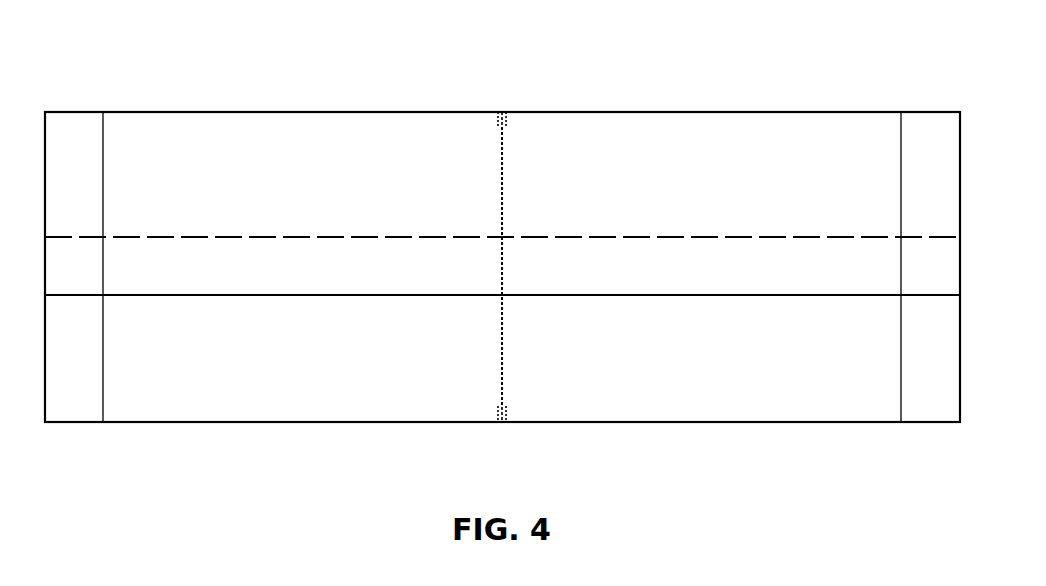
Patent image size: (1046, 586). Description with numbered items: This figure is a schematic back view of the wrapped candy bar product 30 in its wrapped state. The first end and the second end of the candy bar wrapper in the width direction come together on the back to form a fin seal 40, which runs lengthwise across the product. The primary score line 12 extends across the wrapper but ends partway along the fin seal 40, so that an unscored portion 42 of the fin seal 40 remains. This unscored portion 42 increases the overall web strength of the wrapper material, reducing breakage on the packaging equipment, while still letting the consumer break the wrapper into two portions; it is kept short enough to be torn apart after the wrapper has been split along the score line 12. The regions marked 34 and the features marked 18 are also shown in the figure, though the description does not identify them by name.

The wrapped candy bar product 30 is at (789, 80).
The side flap 34 is at (88, 222).
The fin seal 40 is at (720, 281).
The primary score line 12 is at (503, 178).
The slit 18 is at (500, 117).
The unscored portion 42 is at (500, 288).